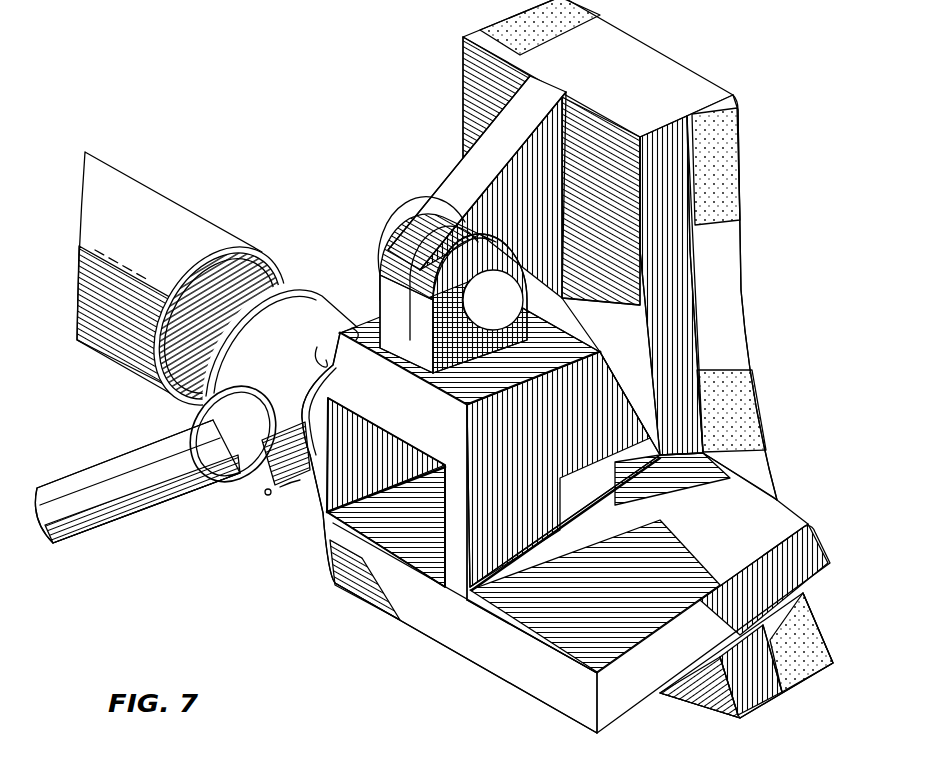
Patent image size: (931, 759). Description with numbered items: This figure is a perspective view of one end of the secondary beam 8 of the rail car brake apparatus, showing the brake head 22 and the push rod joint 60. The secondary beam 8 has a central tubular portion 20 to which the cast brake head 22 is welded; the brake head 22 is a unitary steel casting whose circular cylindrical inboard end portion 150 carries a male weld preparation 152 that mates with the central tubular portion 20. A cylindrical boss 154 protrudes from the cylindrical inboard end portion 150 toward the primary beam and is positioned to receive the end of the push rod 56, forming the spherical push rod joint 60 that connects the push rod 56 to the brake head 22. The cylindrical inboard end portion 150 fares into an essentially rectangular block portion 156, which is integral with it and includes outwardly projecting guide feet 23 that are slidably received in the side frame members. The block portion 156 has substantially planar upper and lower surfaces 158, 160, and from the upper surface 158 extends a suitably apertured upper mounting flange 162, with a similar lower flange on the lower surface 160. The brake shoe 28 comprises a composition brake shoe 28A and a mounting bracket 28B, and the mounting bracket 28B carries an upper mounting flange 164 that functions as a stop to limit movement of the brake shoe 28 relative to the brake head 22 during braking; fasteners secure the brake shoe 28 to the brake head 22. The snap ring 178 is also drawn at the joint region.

The secondary beam 8 is at (348, 145).
The central tubular portion 20 is at (147, 203).
The brake head 22 is at (302, 257).
The guide feet 23 is at (638, 556).
The brake shoe 28 is at (648, 359).
The composition brake shoe 28A is at (724, 192).
The mounting bracket 28B is at (672, 328).
The push rod 56 is at (87, 483).
The push rod joint 60 is at (215, 510).
The cylindrical inboard end portion 150 is at (313, 297).
The male weld preparation 152 is at (212, 345).
The cylindrical boss 154 is at (283, 487).
The rectangular block portion 156 is at (545, 500).
The upper surface 158 is at (352, 328).
The lower surface 160 is at (565, 465).
The upper mounting flange 162 is at (460, 347).
The upper mounting flange 164 is at (446, 200).
The snap ring 178 is at (258, 386).